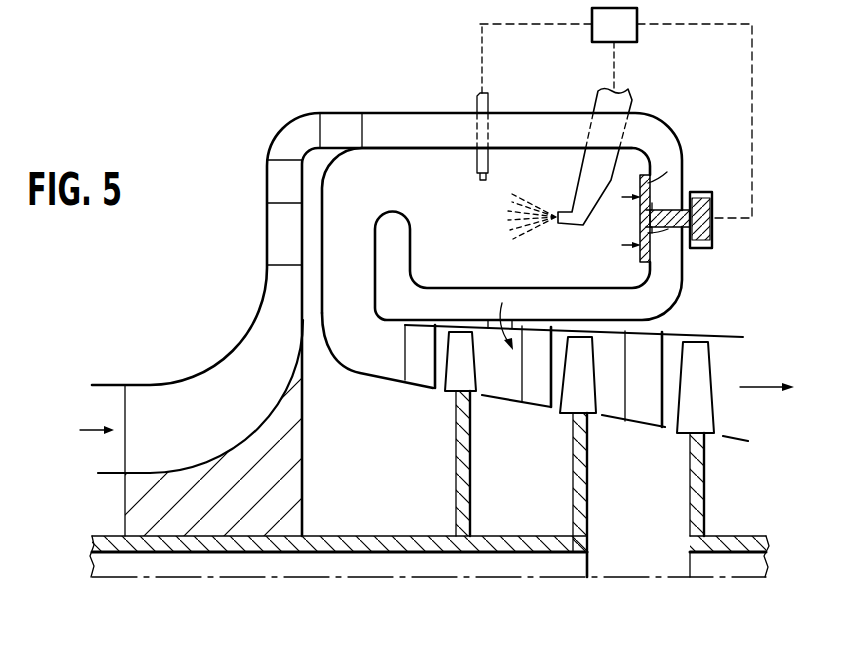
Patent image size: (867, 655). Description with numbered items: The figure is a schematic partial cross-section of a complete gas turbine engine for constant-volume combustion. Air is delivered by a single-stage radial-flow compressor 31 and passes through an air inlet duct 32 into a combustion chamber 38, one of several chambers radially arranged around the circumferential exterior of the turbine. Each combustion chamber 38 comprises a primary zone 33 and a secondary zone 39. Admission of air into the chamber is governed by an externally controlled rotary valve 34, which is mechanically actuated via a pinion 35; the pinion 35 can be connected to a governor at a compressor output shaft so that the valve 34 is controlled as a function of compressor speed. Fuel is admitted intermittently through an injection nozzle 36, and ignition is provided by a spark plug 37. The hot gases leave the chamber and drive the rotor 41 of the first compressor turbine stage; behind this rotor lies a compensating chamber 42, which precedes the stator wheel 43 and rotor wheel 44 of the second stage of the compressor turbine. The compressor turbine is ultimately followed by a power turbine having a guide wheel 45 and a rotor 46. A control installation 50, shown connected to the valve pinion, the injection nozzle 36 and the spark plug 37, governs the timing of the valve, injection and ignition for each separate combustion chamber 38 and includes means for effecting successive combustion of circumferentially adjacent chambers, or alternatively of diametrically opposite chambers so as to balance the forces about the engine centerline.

The single-stage radial-flow compressor 31 is at (173, 425).
The air inlet duct 32 is at (536, 143).
The primary zone 33 is at (500, 233).
The rotary valve 34 is at (642, 183).
The pinion 35 is at (714, 206).
The injection nozzle 36 is at (599, 185).
The spark plug 37 is at (476, 106).
The combustion chamber 38 is at (413, 193).
The secondary zone 39 is at (356, 278).
The rotor of the first compressor turbine stage 41 is at (468, 375).
The compensating chamber 42 is at (506, 375).
The stator wheel of the second compressor turbine stage 43 is at (543, 375).
The rotor wheel of the second compressor turbine stage 44 is at (589, 375).
The guide wheel 45 is at (653, 375).
The rotor of the power turbine 46 is at (704, 375).
The control installation 50 is at (616, 113).